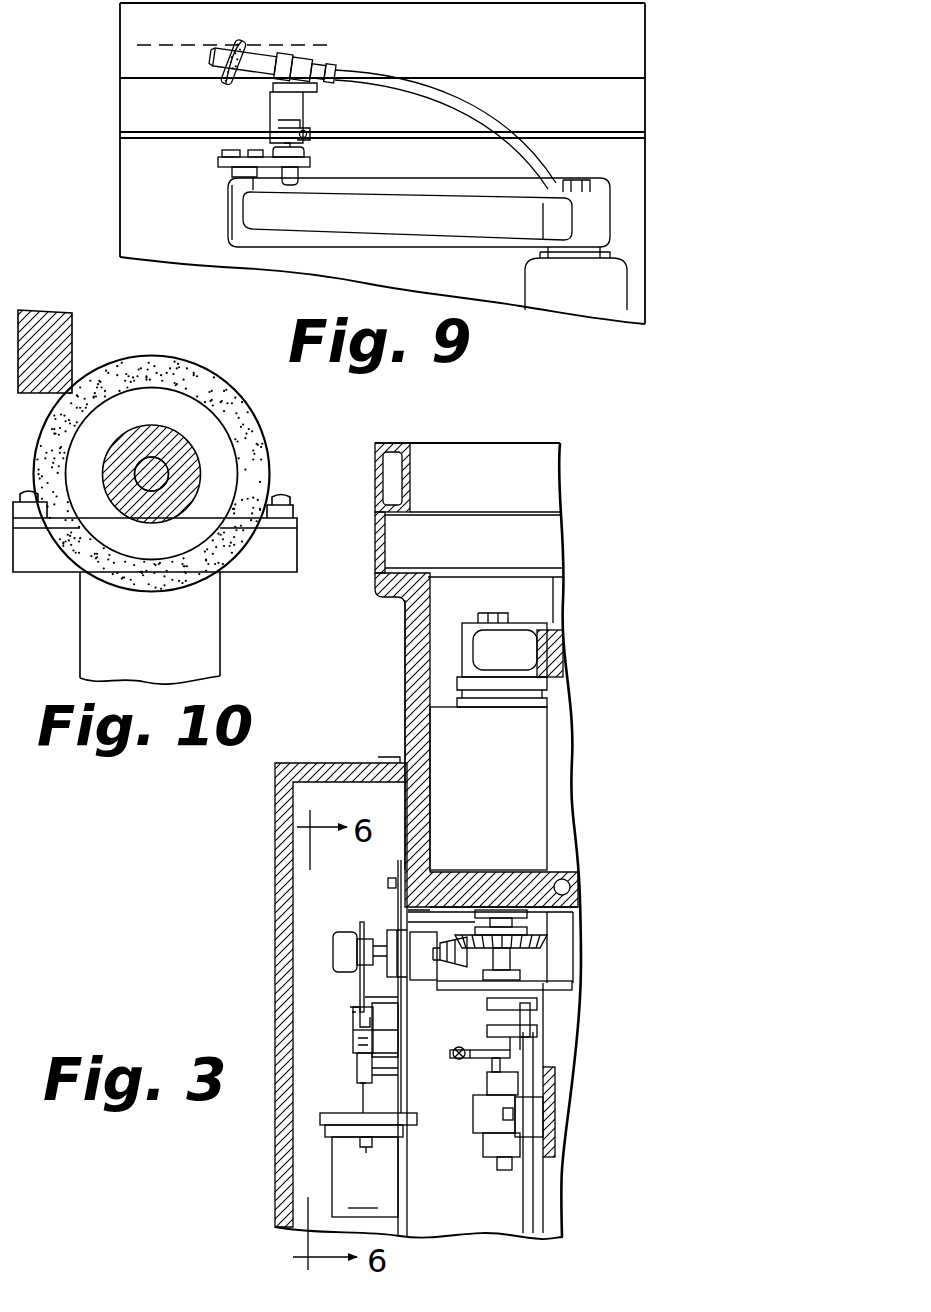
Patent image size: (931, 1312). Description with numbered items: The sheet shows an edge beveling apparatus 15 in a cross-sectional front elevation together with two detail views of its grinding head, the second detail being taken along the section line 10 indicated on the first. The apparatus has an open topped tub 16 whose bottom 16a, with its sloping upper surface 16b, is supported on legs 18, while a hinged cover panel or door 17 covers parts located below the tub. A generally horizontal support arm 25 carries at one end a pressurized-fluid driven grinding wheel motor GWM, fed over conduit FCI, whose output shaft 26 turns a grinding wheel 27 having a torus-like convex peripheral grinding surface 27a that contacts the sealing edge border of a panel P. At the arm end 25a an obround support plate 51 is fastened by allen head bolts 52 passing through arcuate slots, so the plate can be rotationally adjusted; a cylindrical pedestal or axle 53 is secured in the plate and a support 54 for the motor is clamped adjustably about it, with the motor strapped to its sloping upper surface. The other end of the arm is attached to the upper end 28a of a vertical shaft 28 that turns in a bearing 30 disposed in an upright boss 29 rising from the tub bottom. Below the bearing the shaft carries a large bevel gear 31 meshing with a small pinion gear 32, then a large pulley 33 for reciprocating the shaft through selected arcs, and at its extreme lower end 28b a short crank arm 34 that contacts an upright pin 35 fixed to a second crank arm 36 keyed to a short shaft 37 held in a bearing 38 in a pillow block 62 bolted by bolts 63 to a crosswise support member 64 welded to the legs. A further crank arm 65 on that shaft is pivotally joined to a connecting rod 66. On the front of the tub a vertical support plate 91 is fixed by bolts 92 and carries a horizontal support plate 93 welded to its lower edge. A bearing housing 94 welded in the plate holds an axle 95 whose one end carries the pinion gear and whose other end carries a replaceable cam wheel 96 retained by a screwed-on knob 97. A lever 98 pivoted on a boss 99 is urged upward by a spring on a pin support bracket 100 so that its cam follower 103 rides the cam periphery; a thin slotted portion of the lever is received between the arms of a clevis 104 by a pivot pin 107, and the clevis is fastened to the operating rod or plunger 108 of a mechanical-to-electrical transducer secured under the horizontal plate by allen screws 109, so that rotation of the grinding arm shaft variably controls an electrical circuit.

In FIG. 9, the edge beveling apparatus 15 is at (545, 62).
In FIG. 3, the edge beveling apparatus 15 is at (397, 638).
In FIG. 3, the tub 16 is at (405, 677).
In FIG. 3, the bottom of tub 16a is at (569, 884).
In FIG. 3, the upper surface of tub bottom 16b is at (570, 897).
In FIG. 3, the hinged cover panel or door 17 is at (277, 843).
In FIG. 3, the legs 18 is at (474, 1208).
In FIG. 9, the support arm 25 is at (511, 235).
In FIG. 3, the support arm 25 is at (525, 666).
In FIG. 9, the end of support arm 25a is at (230, 200).
In FIG. 10, the output shaft 26 is at (153, 488).
In FIG. 9, the grinding wheel 27 is at (226, 80).
In FIG. 10, the grinding wheel 27 is at (165, 422).
In FIG. 9, the peripheral grinding surface 27a is at (240, 82).
In FIG. 10, the peripheral grinding surface 27a is at (248, 438).
In FIG. 3, the shaft 28 is at (505, 963).
In FIG. 9, the upper end of shaft 28a is at (578, 257).
In FIG. 3, the upper end of shaft 28a is at (525, 685).
In FIG. 3, the extreme lower end of shaft 28b is at (537, 998).
In FIG. 9, the upright boss 29 is at (595, 308).
In FIG. 3, the upright boss 29 is at (501, 753).
In FIG. 3, the bearing 30 is at (510, 913).
In FIG. 3, the bevel gear 31 is at (477, 943).
In FIG. 3, the pinion gear 32 is at (538, 943).
In FIG. 3, the pulley 33 is at (572, 981).
In FIG. 3, the crank arm 34 is at (531, 1005).
In FIG. 3, the pin or peg 35 is at (531, 1017).
In FIG. 3, the second crank arm 36 is at (540, 1040).
In FIG. 3, the axle or shaft 37 is at (492, 1060).
In FIG. 3, the bearing 38 is at (487, 1083).
In FIG. 9, the support plate 51 is at (310, 163).
In FIG. 9, the allen head bolts 52 is at (248, 153).
In FIG. 9, the pedestal or axle 53 is at (303, 152).
In FIG. 9, the support for grinding wheel motor 54 is at (295, 106).
In FIG. 3, the pillow block 62 is at (487, 1120).
In FIG. 3, the bolts 63 is at (513, 1116).
In FIG. 3, the crosswise support member 64 is at (552, 1150).
In FIG. 3, the crank arm 65 is at (473, 1052).
In FIG. 3, the connecting rod 66 is at (452, 1055).
In FIG. 3, the vertical support plate 91 is at (400, 862).
In FIG. 3, the bolts 92 is at (390, 880).
In FIG. 3, the horizontal support plate 93 is at (320, 1118).
In FIG. 3, the bearing housing 94 is at (392, 930).
In FIG. 3, the axle 95 is at (384, 948).
In FIG. 3, the cam wheel 96 is at (360, 926).
In FIG. 3, the knob 97 is at (333, 945).
In FIG. 3, the lever 98 is at (358, 1027).
In FIG. 3, the boss 99 is at (387, 1005).
In FIG. 3, the pin support bracket 100 is at (357, 1053).
In FIG. 3, the cam follower 103 is at (360, 998).
In FIG. 3, the clevis 104 is at (372, 1072).
In FIG. 3, the pivot pin 107 is at (353, 1030).
In FIG. 3, the operating rod or plunger 108 is at (362, 1097).
In FIG. 3, the allen screws 109 is at (365, 1177).
In FIG. 9, the section view direction 10 is at (260, 23).
In FIG. 9, the panel P is at (153, 37).
In FIG. 10, the panel P is at (74, 323).
In FIG. 9, the grinding wheel motor GWM is at (257, 62).
In FIG. 9, the conduit FCI is at (412, 98).